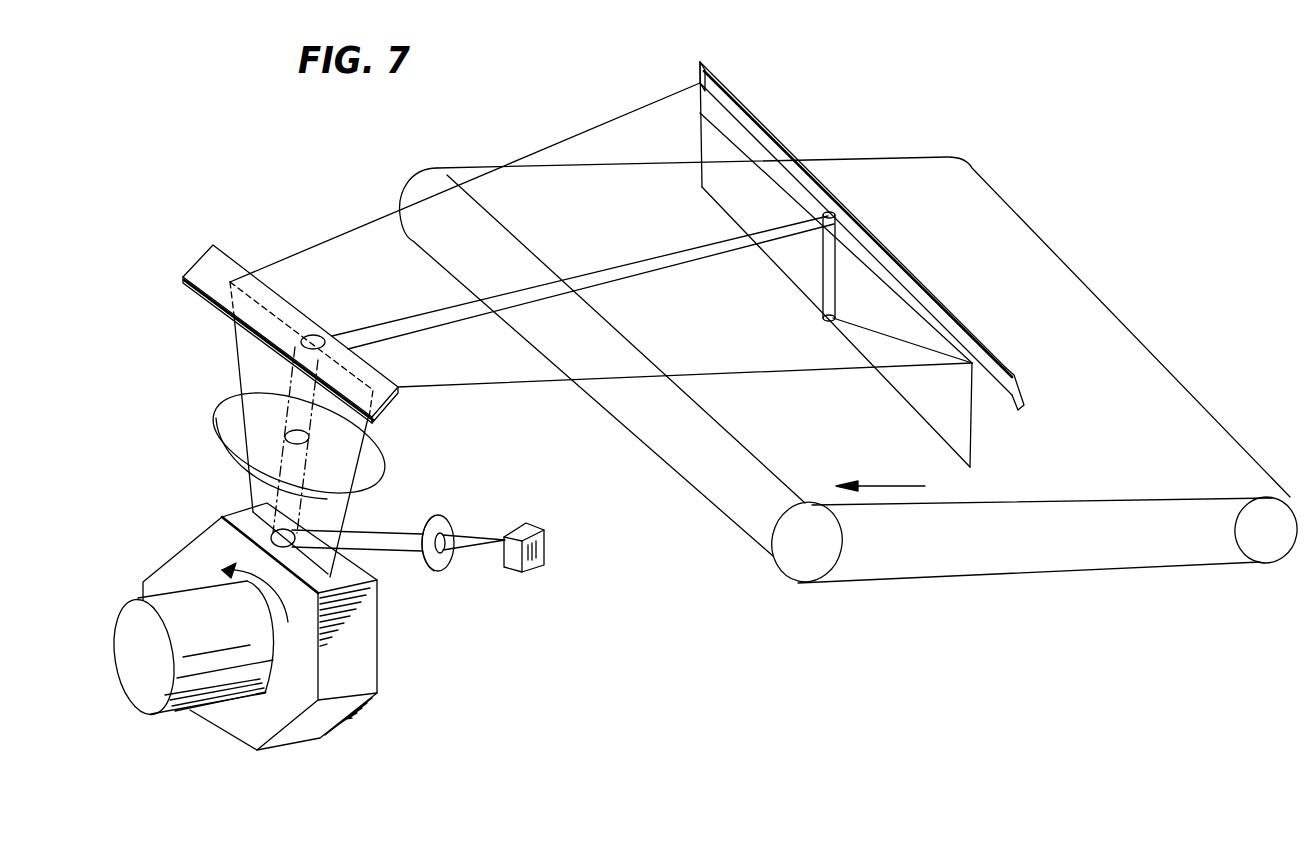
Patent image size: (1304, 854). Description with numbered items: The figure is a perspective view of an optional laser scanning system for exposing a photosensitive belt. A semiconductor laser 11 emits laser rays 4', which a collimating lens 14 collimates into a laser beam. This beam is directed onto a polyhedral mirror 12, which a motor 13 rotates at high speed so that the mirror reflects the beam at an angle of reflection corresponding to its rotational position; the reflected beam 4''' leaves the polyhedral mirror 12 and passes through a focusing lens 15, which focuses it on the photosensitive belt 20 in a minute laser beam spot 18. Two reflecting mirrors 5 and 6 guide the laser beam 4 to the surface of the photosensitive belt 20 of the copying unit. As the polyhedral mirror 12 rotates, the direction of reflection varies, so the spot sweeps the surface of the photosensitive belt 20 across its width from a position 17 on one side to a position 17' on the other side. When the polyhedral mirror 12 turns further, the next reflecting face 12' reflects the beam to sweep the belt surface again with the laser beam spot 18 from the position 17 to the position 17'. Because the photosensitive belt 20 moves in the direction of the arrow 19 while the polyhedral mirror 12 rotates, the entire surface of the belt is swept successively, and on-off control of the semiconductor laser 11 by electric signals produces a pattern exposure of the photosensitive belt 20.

The laser beam 4 is at (601, 235).
The laser rays 4' is at (478, 517).
The deflected light beam 4''' is at (309, 429).
The reflecting mirror 5 is at (215, 253).
The reflecting mirror 6 is at (1010, 362).
The semiconductor laser 11 is at (536, 574).
The polyhedral mirror 12 is at (260, 626).
The reflecting face 12' is at (373, 661).
The motor 13 is at (205, 703).
The collimating lens 14 is at (446, 525).
The focusing lens 15 is at (223, 408).
The position 17 is at (838, 343).
The position 17' is at (688, 138).
The laser beam spot 18 is at (823, 321).
The arrow 19 is at (880, 472).
The photosensitive belt 20 is at (1027, 493).